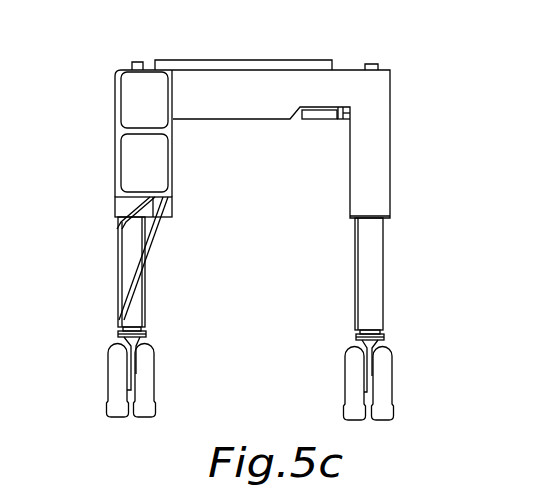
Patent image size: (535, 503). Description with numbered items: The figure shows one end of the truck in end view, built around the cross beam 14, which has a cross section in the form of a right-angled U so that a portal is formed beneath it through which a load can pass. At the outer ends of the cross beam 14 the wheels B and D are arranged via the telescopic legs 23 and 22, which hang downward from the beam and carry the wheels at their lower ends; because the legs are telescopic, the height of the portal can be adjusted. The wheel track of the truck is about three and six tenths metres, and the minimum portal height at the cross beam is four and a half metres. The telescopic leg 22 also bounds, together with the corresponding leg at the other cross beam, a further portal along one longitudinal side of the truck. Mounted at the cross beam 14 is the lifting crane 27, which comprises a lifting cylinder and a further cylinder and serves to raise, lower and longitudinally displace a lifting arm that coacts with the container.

The cross beam 14 is at (276, 87).
The lifting crane 27 is at (143, 107).
The telescopic leg 23 is at (131, 258).
The telescopic leg 22 is at (372, 273).
The wheel B is at (120, 379).
The wheel D is at (383, 381).